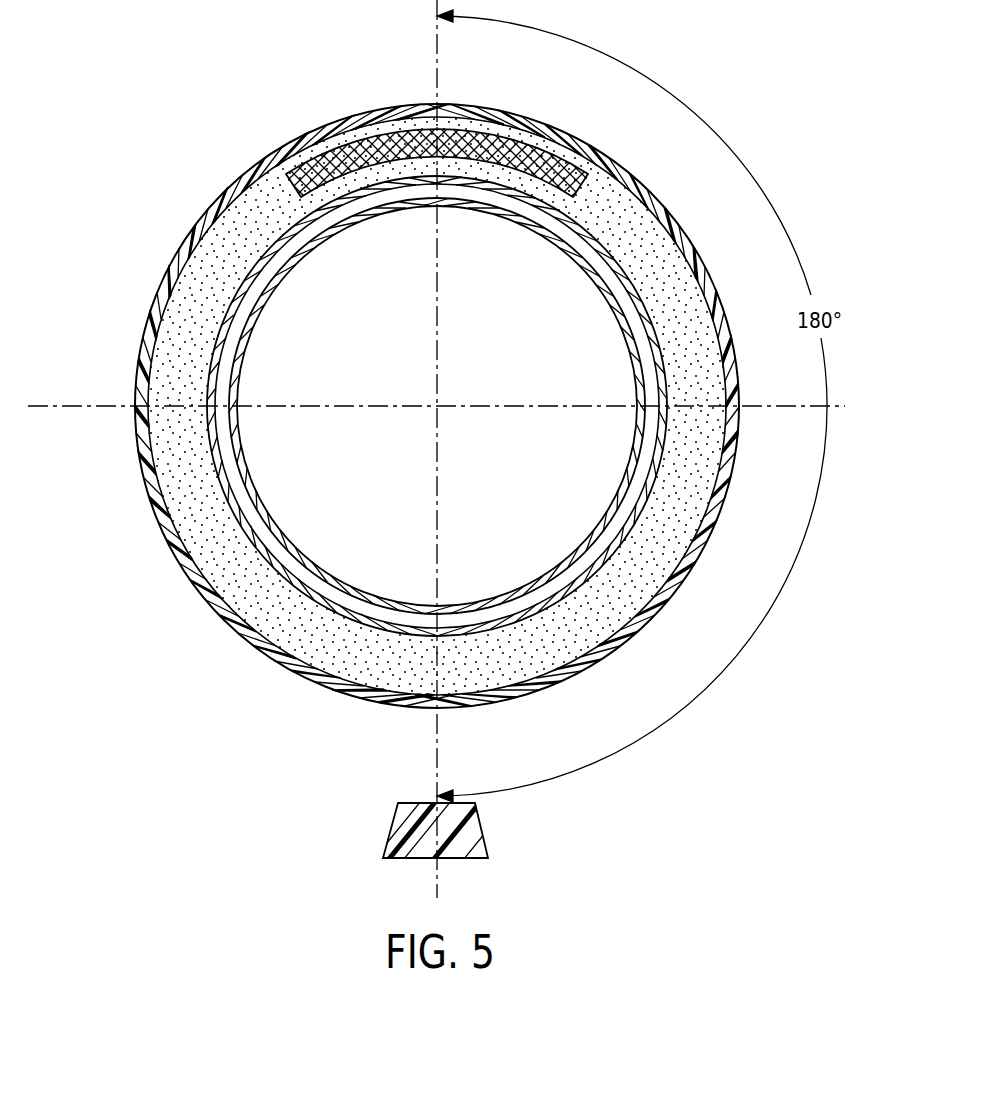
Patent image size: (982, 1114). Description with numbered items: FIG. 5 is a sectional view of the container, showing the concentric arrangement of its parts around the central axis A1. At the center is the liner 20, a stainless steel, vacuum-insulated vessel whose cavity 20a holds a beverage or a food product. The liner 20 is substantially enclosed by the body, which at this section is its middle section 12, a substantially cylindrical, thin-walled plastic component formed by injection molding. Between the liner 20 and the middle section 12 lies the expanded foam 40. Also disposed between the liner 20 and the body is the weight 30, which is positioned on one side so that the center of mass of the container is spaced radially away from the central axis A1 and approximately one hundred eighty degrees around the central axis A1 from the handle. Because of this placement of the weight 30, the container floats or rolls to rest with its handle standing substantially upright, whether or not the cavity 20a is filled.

The middle section 12 is at (240, 633).
The liner 20 is at (651, 322).
The cavity 20a is at (397, 352).
The weight 30 is at (598, 182).
The expanded foam 40 is at (200, 328).
The central axis A1 is at (437, 407).